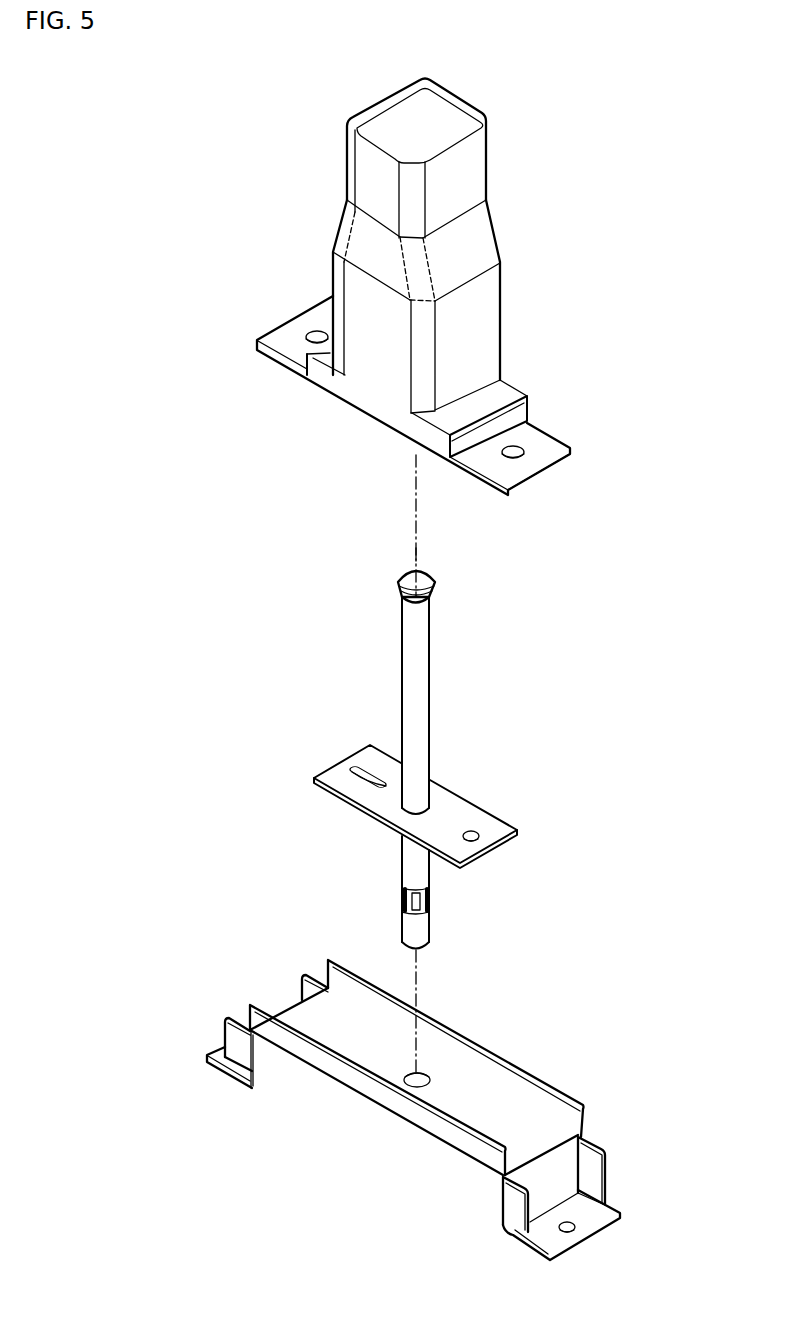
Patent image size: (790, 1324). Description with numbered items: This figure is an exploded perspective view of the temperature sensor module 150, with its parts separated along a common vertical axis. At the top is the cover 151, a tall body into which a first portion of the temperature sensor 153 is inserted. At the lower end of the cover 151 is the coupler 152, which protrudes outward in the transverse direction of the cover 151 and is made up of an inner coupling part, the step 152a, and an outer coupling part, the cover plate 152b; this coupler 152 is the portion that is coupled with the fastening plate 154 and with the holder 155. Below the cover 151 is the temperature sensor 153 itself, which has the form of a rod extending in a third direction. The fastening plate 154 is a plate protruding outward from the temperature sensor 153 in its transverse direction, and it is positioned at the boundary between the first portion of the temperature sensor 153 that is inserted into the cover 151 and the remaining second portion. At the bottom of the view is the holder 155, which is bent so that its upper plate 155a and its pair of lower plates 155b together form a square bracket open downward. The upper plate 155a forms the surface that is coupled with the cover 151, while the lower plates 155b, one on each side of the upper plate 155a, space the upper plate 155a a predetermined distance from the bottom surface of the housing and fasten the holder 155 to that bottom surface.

The temperature sensor module 150 is at (619, 101).
The cover 151 is at (478, 243).
The coupler 152 is at (632, 343).
The step 152a is at (502, 392).
The cover plate 152b is at (547, 443).
The temperature sensor 153 is at (435, 710).
The fastening plate 154 is at (478, 817).
The holder 155 is at (319, 1268).
The upper plate 155a is at (377, 1053).
The lower plates 155b is at (222, 1060).